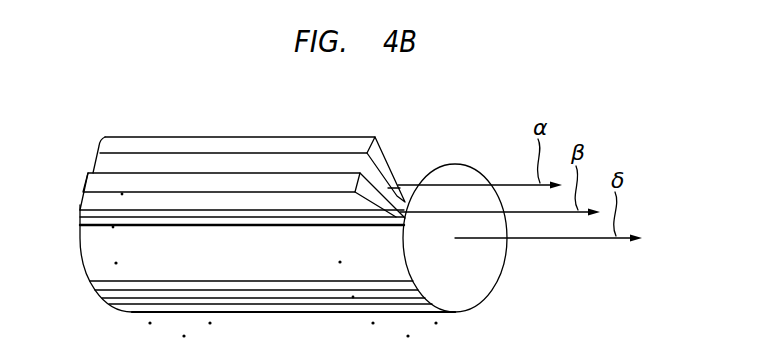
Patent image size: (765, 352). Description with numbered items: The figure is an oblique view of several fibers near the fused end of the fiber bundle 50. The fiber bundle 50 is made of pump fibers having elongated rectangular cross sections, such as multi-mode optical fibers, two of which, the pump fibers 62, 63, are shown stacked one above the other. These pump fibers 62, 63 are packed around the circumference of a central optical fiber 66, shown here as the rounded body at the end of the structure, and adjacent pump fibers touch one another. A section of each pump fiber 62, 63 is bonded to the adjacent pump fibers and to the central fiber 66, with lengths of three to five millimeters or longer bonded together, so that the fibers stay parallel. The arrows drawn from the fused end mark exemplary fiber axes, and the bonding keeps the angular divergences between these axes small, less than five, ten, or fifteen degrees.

The fiber bundle 50 is at (102, 110).
The pump fiber 62 is at (84, 183).
The pump fiber 63 is at (231, 139).
The central optical fiber 66 is at (469, 289).